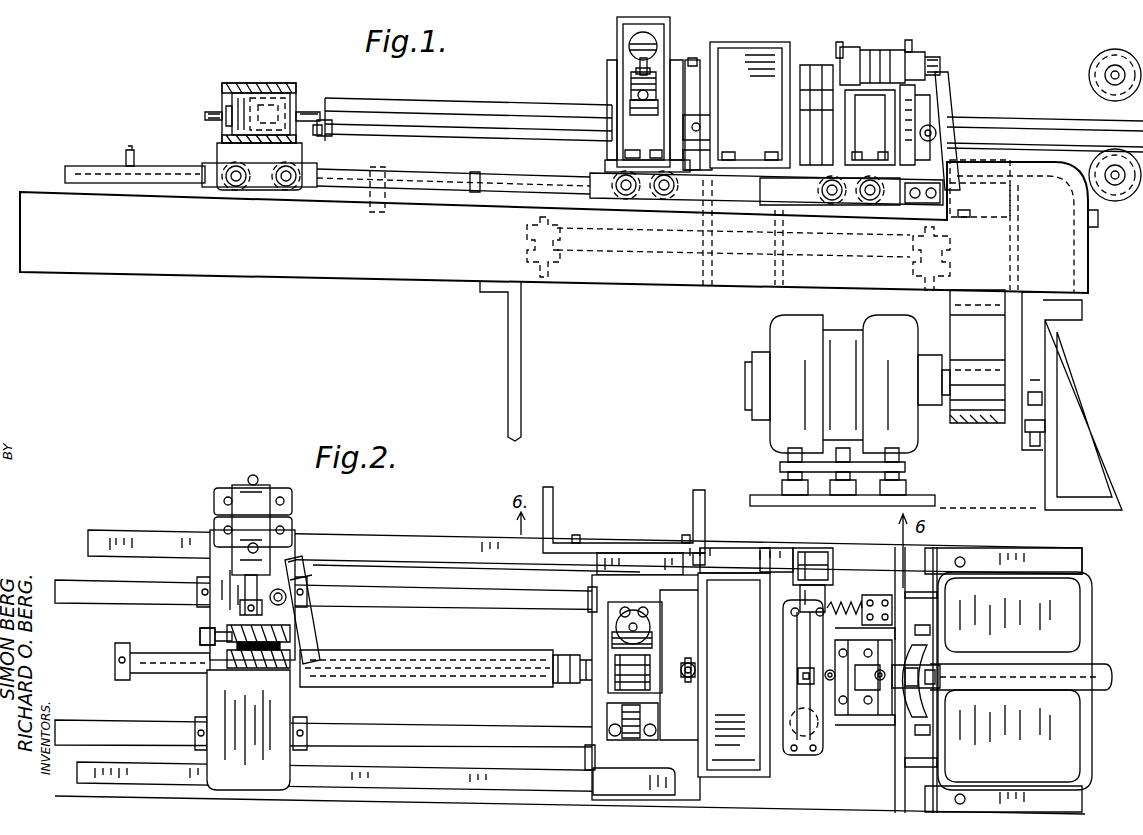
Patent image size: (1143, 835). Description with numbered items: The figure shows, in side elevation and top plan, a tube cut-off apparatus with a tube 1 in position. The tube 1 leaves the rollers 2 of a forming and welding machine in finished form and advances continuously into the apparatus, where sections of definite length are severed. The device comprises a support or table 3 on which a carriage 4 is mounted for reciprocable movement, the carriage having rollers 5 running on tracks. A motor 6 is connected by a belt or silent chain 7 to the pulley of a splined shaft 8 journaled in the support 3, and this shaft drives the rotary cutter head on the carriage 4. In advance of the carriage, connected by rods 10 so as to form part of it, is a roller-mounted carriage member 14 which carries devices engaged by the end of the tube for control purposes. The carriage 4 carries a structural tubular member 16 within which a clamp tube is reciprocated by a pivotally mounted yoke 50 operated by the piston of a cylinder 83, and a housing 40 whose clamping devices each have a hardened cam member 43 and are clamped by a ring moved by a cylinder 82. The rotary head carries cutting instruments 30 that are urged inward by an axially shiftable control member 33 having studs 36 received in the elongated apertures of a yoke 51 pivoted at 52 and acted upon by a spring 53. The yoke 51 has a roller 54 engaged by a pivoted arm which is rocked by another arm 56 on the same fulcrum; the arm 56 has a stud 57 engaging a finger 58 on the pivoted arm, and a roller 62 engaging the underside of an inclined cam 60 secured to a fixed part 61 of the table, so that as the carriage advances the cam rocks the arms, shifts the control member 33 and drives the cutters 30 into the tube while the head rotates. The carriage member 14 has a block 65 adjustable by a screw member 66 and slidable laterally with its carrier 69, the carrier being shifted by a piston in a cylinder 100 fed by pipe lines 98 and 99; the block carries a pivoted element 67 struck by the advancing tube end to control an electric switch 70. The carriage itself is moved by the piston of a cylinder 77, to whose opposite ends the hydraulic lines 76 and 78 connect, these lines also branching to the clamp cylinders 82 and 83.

In FIG. 1, the tube 1 is at (520, 110).
In FIG. 2, the tube 1 is at (468, 673).
In FIG. 1, the rollers 2 is at (1102, 70).
In FIG. 2, the rollers 2 is at (1018, 680).
In FIG. 1, the support or table 3 is at (634, 276).
In FIG. 1, the carriage 4 is at (800, 192).
In FIG. 1, the rollers 5 is at (870, 202).
In FIG. 1, the motor 6 is at (787, 420).
In FIG. 1, the belt or silent chain 7 is at (969, 424).
In FIG. 1, the shaft 8 is at (683, 258).
In FIG. 1, the rods 10 is at (457, 178).
In FIG. 2, the rods 10 is at (458, 597).
In FIG. 1, the carriage member 14 is at (238, 78).
In FIG. 2, the carriage member 14 is at (217, 567).
In FIG. 1, the structural tubular member 16 is at (830, 100).
In FIG. 2, the structural tubular member 16 is at (827, 653).
In FIG. 1, the cutting instruments 30 is at (688, 66).
In FIG. 2, the cutting instruments 30 is at (680, 653).
In FIG. 1, the control member 33 is at (795, 125).
In FIG. 2, the control member 33 is at (775, 660).
In FIG. 2, the studs 36 is at (807, 680).
In FIG. 1, the housing 40 is at (613, 87).
In FIG. 2, the housing 40 is at (613, 620).
In FIG. 1, the cam member 43 is at (633, 74).
In FIG. 2, the cam member 43 is at (630, 730).
In FIG. 1, the yoke 50 is at (950, 100).
In FIG. 2, the yoke 50 is at (937, 646).
In FIG. 1, the yoke 51 is at (800, 72).
In FIG. 2, the yoke 51 is at (803, 635).
In FIG. 2, the pivot 52 is at (808, 723).
In FIG. 2, the spring 53 is at (845, 600).
In FIG. 2, the roller 54 is at (792, 585).
In FIG. 2, the arm 56 is at (743, 563).
In FIG. 2, the stud 57 is at (822, 548).
In FIG. 2, the finger 58 is at (815, 555).
In FIG. 2, the cam 60 is at (610, 553).
In FIG. 2, the fixed part 61 is at (578, 542).
In FIG. 2, the roller 62 is at (705, 545).
In FIG. 1, the block 65 is at (279, 84).
In FIG. 2, the block 65 is at (265, 668).
In FIG. 1, the screw member 66 is at (220, 105).
In FIG. 2, the screw member 66 is at (205, 633).
In FIG. 1, the pivoted element 67 is at (318, 112).
In FIG. 2, the pivoted element 67 is at (305, 650).
In FIG. 1, the carrier 69 is at (248, 90).
In FIG. 2, the carrier 69 is at (235, 666).
In FIG. 1, the electric switch 70 is at (332, 128).
In FIG. 2, the electric switch 70 is at (307, 567).
In FIG. 1, the line 76 is at (127, 160).
In FIG. 1, the cylinder 77 is at (167, 190).
In FIG. 2, the cylinder 77 is at (180, 648).
In FIG. 1, the line 78 is at (906, 56).
In FIG. 1, the cylinder 82 is at (630, 47).
In FIG. 2, the cylinder 82 is at (610, 670).
In FIG. 1, the cylinder 83 is at (865, 63).
In FIG. 2, the cylinder 83 is at (843, 717).
In FIG. 2, the pipe line 98 is at (270, 472).
In FIG. 2, the pipe line 99 is at (278, 575).
In FIG. 2, the cylinder 100 is at (287, 514).